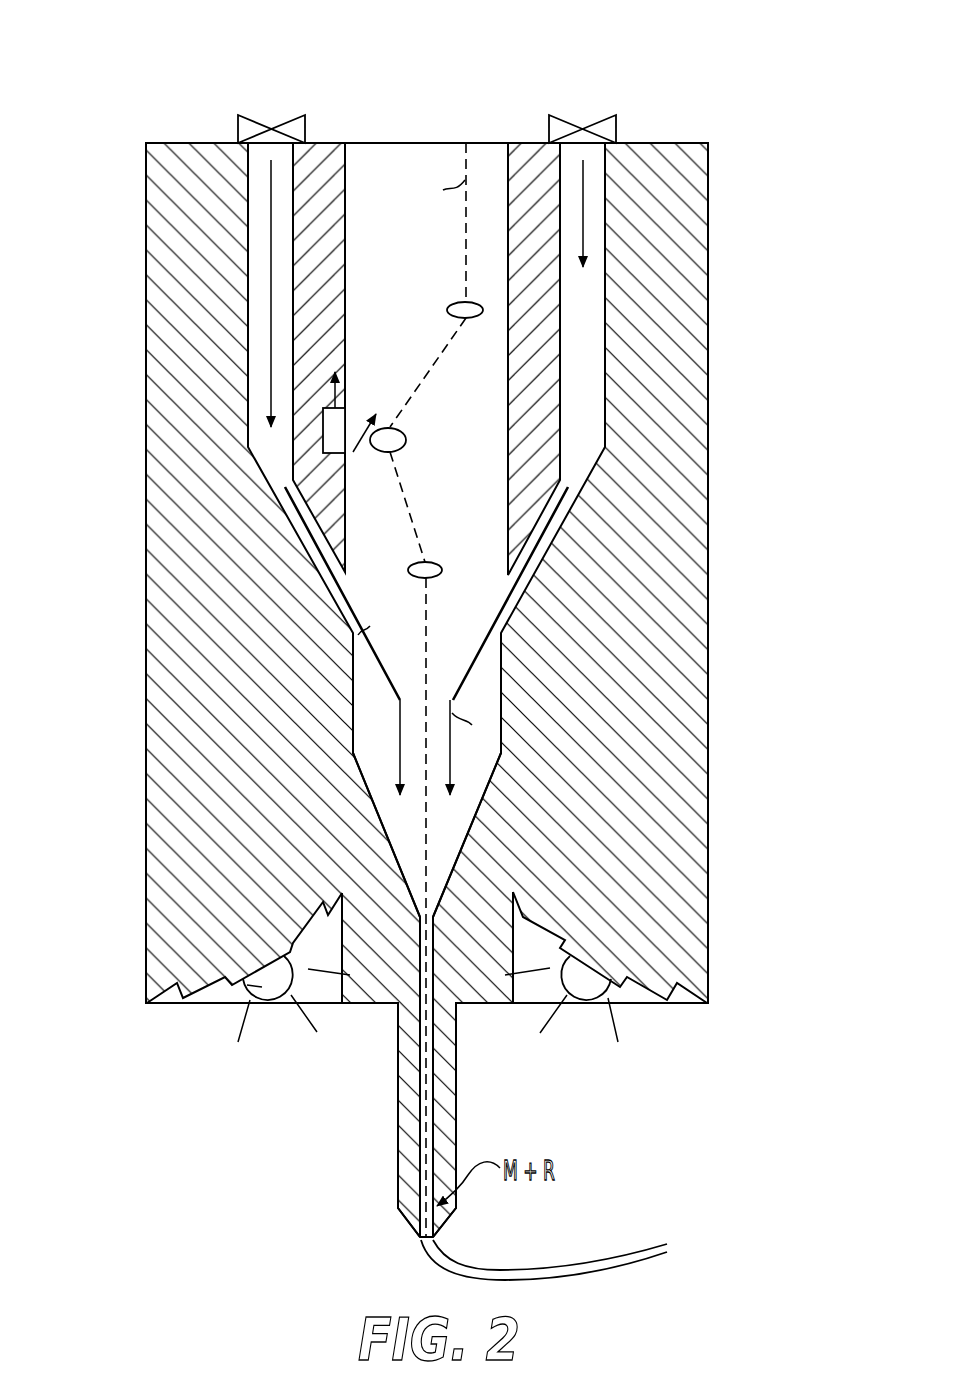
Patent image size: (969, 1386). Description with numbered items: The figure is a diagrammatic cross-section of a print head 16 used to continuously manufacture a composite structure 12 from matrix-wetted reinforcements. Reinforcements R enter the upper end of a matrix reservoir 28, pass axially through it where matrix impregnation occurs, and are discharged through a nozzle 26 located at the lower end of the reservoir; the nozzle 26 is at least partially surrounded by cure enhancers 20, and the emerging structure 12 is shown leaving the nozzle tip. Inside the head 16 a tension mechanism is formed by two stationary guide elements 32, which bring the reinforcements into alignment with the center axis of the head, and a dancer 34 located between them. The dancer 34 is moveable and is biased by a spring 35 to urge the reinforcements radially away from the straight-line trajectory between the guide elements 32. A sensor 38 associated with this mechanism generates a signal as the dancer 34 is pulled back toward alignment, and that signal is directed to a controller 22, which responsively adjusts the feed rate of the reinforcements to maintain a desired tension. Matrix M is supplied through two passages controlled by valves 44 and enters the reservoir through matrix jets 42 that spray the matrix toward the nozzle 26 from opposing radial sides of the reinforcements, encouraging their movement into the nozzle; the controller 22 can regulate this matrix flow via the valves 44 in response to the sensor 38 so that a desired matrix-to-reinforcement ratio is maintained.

The head 16 is at (70, 82).
The valve 44 is at (306, 133).
The controller 22 is at (330, 373).
The sensor 38 is at (333, 453).
The spring 35 is at (352, 437).
The dancer 34 is at (432, 437).
The guide element 32 is at (467, 318).
The matrix jet 42 is at (310, 568).
The matrix reservoir 28 is at (392, 743).
The cure enhancer 20 is at (262, 987).
The nozzle 26 is at (450, 1137).
The composite structure 12 is at (622, 1252).